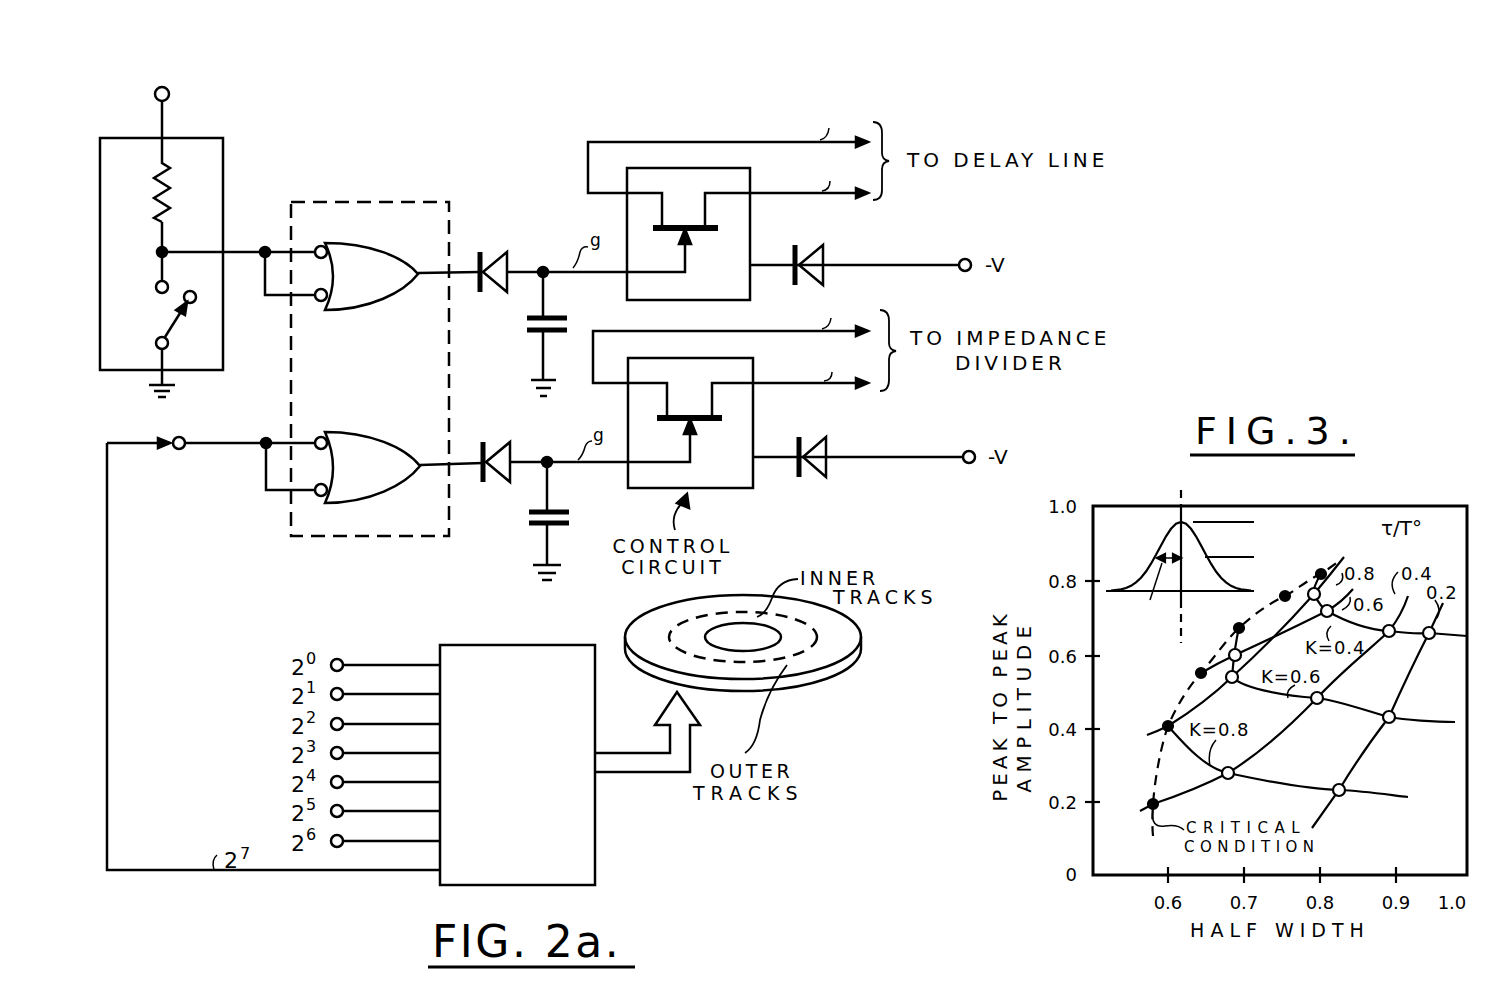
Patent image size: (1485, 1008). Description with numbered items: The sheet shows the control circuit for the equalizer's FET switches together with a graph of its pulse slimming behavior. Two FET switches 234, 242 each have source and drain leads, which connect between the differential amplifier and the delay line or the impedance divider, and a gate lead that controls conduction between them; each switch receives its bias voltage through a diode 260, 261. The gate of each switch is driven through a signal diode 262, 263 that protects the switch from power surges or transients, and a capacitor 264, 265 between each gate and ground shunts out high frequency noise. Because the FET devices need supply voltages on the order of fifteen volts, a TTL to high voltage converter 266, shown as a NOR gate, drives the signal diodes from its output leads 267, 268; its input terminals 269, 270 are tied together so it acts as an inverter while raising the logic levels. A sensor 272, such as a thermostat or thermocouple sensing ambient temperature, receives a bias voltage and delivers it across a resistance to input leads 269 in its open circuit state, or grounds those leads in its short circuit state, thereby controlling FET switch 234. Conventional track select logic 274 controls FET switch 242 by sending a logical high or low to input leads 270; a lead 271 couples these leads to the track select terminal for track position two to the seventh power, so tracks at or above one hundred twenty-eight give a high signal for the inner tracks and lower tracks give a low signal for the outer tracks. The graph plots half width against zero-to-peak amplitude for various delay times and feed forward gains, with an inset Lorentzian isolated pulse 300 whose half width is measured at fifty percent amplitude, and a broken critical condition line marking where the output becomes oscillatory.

In FIG. 2A, the sensor 272 is at (223, 150).
In FIG. 2A, the TTL to high voltage converter 266 is at (380, 201).
In FIG. 2A, the input terminals 269 is at (357, 243).
In FIG. 2A, the output lead 267 is at (432, 278).
In FIG. 2A, the signal diode 262 is at (493, 252).
In FIG. 2A, the capacitor 264 is at (525, 333).
In FIG. 2A, the FET switch 234 is at (752, 230).
In FIG. 2A, the diode 260 is at (825, 255).
In FIG. 2A, the signal diode 263 is at (497, 442).
In FIG. 2A, the capacitor 265 is at (569, 523).
In FIG. 2A, the FET switch 242 is at (755, 420).
In FIG. 2A, the diode 261 is at (827, 466).
In FIG. 2A, the input terminals 270 is at (358, 432).
In FIG. 2A, the output lead 268 is at (435, 468).
In FIG. 2A, the lead 271 is at (107, 543).
In FIG. 2A, the track select logic 274 is at (487, 645).
In FIG. 3, the isolated pulse 300 is at (1158, 556).